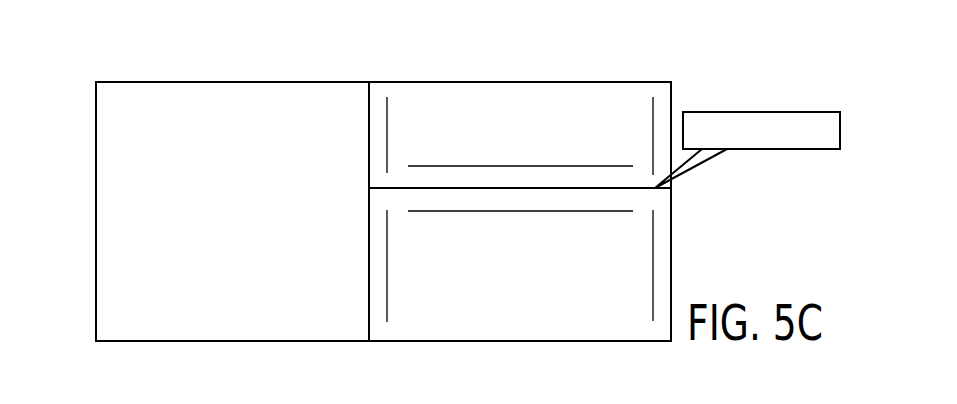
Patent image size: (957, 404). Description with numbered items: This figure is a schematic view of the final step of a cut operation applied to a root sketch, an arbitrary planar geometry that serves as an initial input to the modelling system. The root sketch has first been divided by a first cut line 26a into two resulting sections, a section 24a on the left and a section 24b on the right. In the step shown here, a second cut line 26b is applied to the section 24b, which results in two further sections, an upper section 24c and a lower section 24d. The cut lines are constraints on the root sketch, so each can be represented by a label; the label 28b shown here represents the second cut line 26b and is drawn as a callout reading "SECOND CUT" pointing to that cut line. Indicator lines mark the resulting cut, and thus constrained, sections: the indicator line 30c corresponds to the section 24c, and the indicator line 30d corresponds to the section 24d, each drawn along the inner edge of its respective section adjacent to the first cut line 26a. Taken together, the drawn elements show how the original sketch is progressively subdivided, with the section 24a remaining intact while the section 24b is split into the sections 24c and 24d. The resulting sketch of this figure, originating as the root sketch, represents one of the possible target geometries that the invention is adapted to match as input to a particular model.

The section 24a is at (163, 82).
The section 24b is at (666, 58).
The section 24c is at (520, 82).
The section 24d is at (519, 341).
The first cut line 26a is at (368, 108).
The second cut line 26b is at (635, 189).
The label 28b is at (840, 130).
The indicator line 30c is at (388, 117).
The indicator line 30d is at (387, 300).